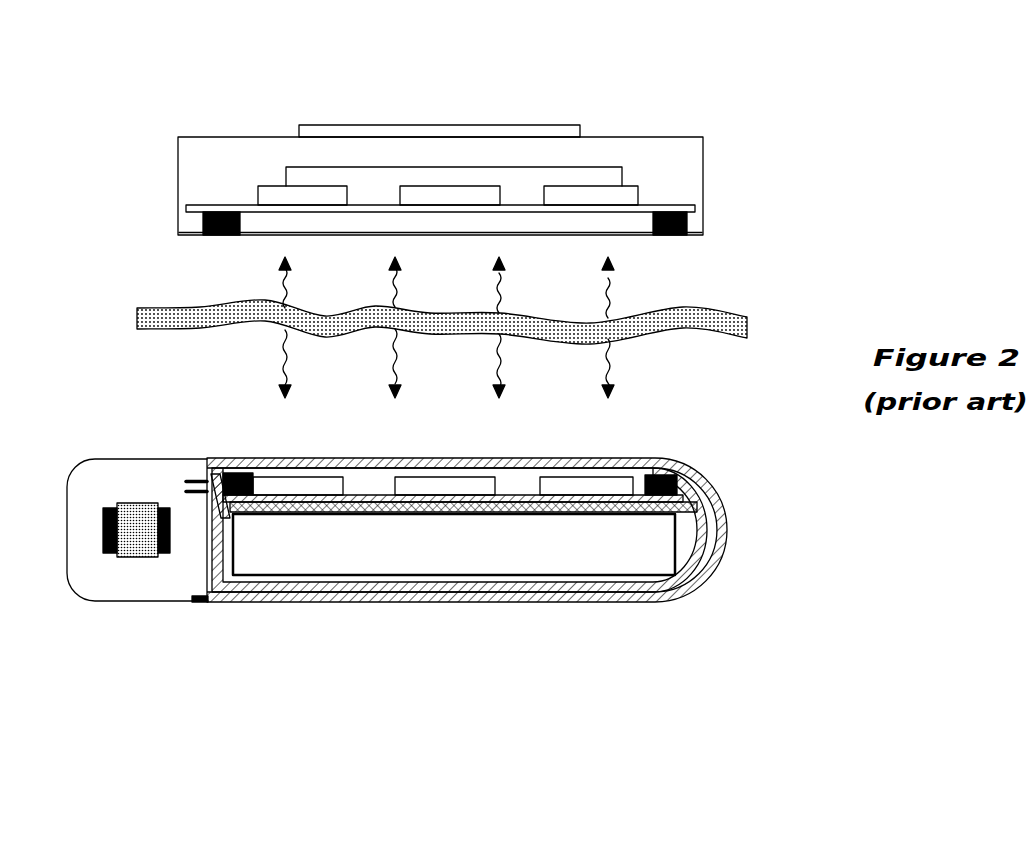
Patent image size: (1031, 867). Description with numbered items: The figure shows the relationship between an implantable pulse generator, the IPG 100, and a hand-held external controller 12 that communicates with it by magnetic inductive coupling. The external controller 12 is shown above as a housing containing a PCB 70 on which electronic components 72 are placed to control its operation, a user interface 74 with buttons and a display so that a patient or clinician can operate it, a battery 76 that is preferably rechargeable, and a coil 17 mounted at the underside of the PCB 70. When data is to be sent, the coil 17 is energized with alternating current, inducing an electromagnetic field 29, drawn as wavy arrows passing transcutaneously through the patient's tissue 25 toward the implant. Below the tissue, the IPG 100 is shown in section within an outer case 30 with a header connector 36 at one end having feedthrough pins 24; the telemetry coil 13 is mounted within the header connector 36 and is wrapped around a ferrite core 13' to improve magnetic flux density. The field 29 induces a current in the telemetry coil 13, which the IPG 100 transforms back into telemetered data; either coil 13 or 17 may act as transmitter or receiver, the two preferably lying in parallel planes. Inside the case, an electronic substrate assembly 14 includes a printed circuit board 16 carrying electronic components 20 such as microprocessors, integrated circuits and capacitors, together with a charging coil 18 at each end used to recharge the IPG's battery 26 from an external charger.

The external controller 12 is at (250, 72).
The user interface 74 is at (525, 125).
The PCB 70 is at (364, 205).
The battery 76 is at (410, 167).
The electronic components 72 is at (305, 195).
The coil 17 is at (203, 227).
The patient's tissue 25 is at (718, 318).
The electromagnetic field 29 is at (500, 283).
The IPG 100 is at (158, 388).
The outer housing 30 is at (262, 603).
The header connector 36 is at (103, 458).
The connector pins 24 is at (187, 480).
The telemetry coil 13 is at (136, 549).
The ferrite core 13' is at (148, 516).
The charging coil 18 is at (233, 477).
The electronic components 20 is at (302, 485).
The electronic substrate assembly 14 is at (373, 494).
The printed circuit board 16 is at (512, 504).
The battery 26 is at (444, 565).